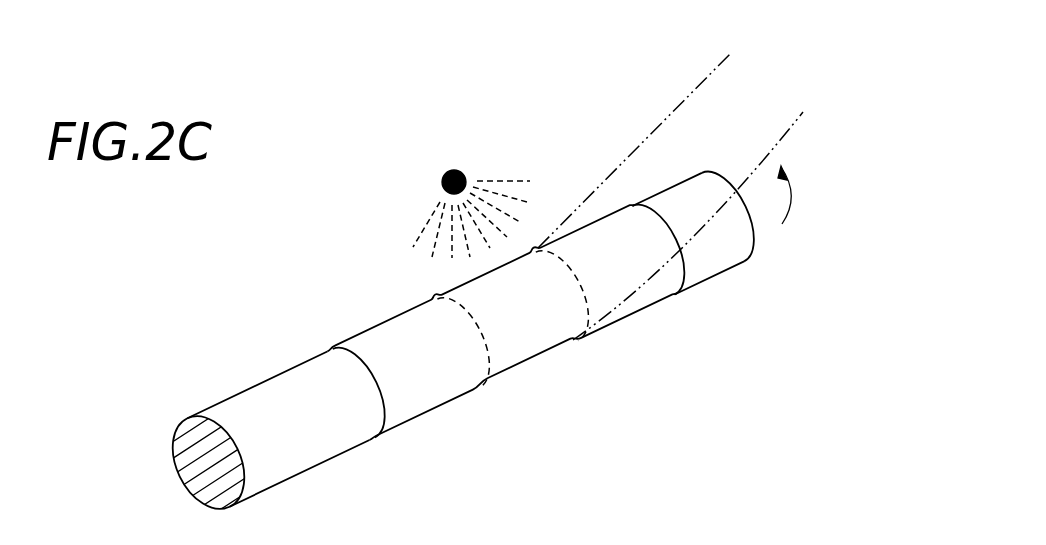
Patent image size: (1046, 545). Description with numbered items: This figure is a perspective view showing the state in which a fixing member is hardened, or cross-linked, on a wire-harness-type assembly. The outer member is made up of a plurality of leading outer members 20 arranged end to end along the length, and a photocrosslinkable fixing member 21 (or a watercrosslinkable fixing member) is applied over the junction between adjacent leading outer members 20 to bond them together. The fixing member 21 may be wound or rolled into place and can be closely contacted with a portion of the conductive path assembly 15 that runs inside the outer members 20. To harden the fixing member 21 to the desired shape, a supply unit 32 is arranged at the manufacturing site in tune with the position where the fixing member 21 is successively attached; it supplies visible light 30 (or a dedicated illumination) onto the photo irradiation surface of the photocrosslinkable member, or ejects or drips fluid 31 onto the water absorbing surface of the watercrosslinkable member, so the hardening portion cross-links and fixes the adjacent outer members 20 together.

The leading outer member 20 is at (242, 408).
The photocrosslinkable fixing member 21 is at (377, 323).
The conductive path assembly 15 is at (528, 338).
The visible light 30 is at (490, 178).
The fluid 31 is at (510, 180).
The supply unit 32 is at (442, 187).